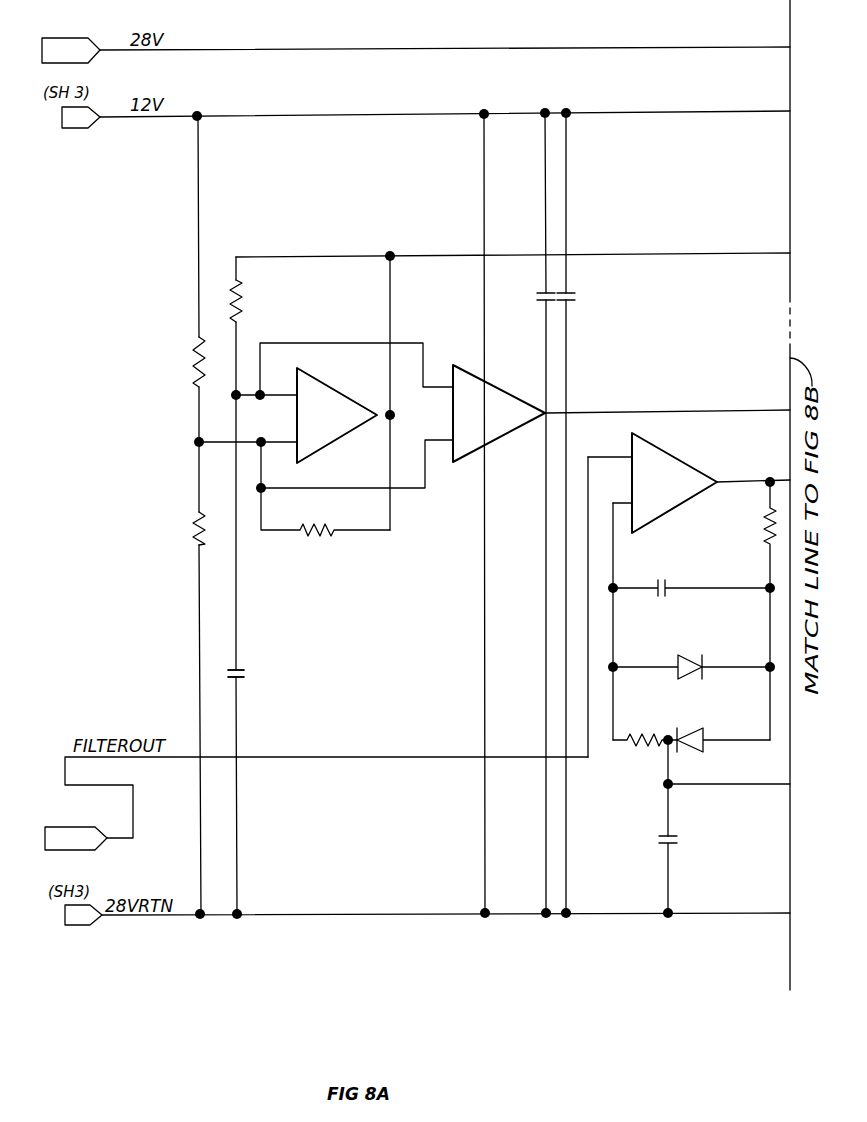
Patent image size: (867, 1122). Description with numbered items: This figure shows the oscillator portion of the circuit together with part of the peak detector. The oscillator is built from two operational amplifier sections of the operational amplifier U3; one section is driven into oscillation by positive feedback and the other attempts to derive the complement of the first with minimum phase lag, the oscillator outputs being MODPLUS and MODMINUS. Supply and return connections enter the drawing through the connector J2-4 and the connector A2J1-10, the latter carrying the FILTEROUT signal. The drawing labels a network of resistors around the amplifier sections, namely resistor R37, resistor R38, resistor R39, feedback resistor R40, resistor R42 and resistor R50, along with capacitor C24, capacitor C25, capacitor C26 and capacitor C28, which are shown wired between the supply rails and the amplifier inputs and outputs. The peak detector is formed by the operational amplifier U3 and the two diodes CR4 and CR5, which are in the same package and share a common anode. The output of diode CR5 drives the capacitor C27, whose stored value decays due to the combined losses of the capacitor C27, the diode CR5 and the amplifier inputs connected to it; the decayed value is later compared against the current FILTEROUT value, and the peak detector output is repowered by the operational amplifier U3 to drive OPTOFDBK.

The 28V connector pin J2-4 is at (71, 50).
The filter output connector pin A2J1-10 is at (76, 826).
The resistor 100K R37 is at (174, 360).
The resistor 100K R38 is at (176, 527).
The resistor 100K R39 is at (265, 298).
The feedback resistor 100K R40 is at (325, 501).
The resistor 1K R42 is at (753, 611).
The resistor 100K R50 is at (643, 730).
The capacitor 150PF C24 is at (296, 674).
The capacitor 0.1uF 50V C25 is at (521, 301).
The capacitor 0.1uF 50V C26 is at (601, 301).
The capacitor C27 is at (631, 863).
The capacitor 0.01uF 50V C28 is at (691, 577).
The diode CR5 is at (691, 654).
The diode CR4 is at (726, 752).
The operational amplifier U3 is at (505, 449).